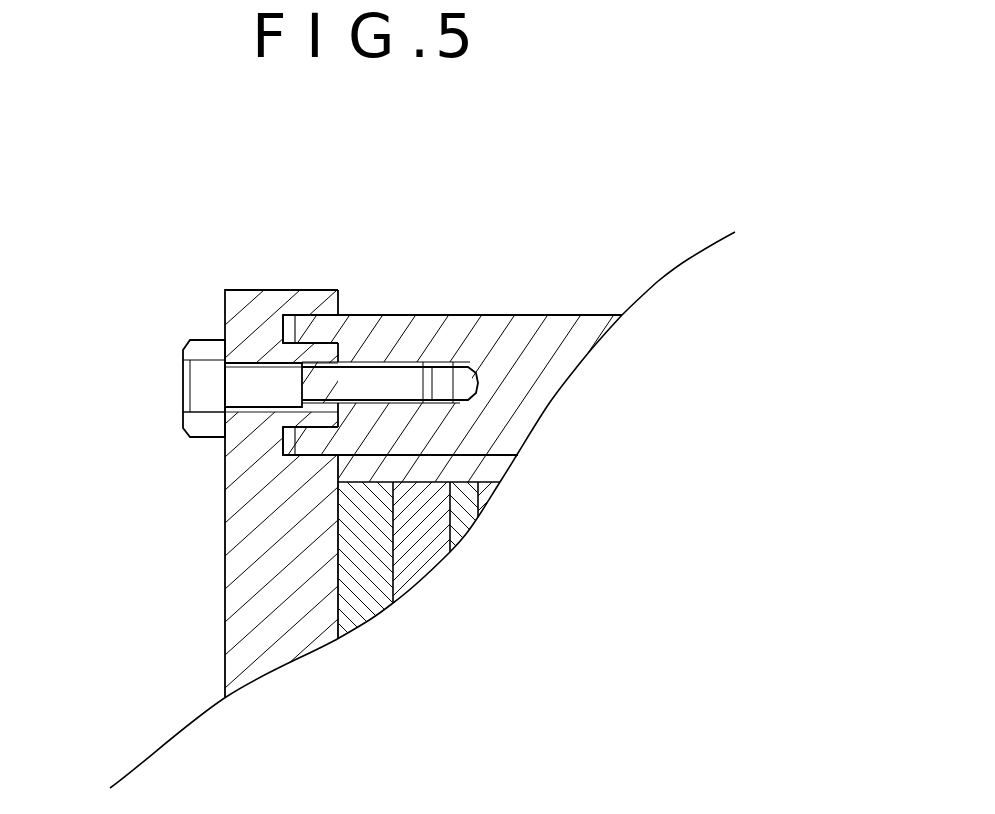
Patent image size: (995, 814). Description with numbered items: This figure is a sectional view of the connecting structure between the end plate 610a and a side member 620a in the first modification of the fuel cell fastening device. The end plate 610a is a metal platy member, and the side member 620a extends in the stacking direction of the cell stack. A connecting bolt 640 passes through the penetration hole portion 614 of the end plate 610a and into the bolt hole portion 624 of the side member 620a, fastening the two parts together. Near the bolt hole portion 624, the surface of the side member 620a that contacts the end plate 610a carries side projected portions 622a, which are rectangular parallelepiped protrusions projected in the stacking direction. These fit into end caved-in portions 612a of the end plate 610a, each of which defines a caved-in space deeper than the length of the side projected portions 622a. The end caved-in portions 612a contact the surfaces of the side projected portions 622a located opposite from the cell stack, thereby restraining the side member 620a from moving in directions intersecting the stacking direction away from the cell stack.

The end plate 610a is at (247, 300).
The end caved-in portion 612a is at (310, 314).
The penetration hole portion 614 is at (284, 366).
The side member 620a is at (537, 337).
The side projected portion 622a is at (307, 327).
The bolt hole portion 624 is at (452, 378).
The connecting bolt 640 is at (182, 387).